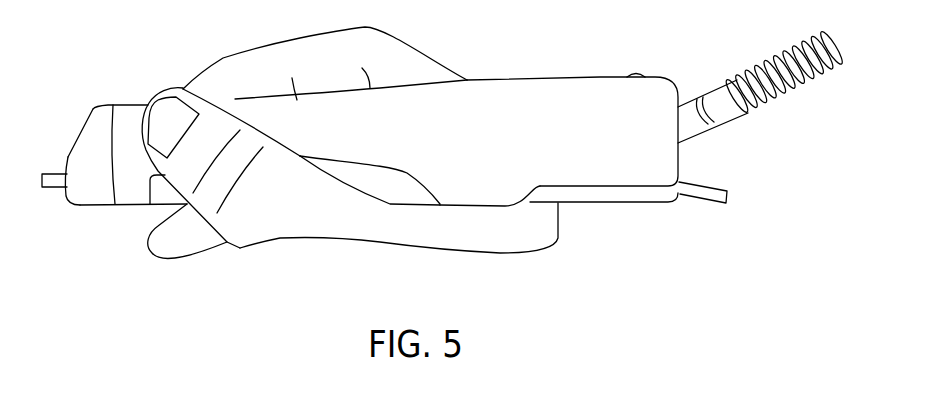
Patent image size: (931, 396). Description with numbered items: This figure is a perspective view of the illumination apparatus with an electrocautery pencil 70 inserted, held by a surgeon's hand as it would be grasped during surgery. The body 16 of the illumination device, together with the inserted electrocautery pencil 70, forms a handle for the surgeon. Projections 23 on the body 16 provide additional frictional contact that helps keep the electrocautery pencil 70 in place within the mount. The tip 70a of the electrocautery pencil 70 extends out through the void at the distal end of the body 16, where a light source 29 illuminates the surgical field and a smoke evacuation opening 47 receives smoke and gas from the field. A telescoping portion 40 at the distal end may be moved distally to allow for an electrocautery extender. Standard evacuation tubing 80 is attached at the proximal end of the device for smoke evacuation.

The body 16 is at (552, 88).
The projections 23 is at (490, 197).
The light source 29 is at (63, 167).
The telescoping portion 40 is at (130, 210).
The smoke evacuation opening 47 is at (92, 120).
The electrocautery pencil 70 is at (618, 193).
The tip 70a is at (53, 187).
The evacuation tubing 80 is at (765, 105).